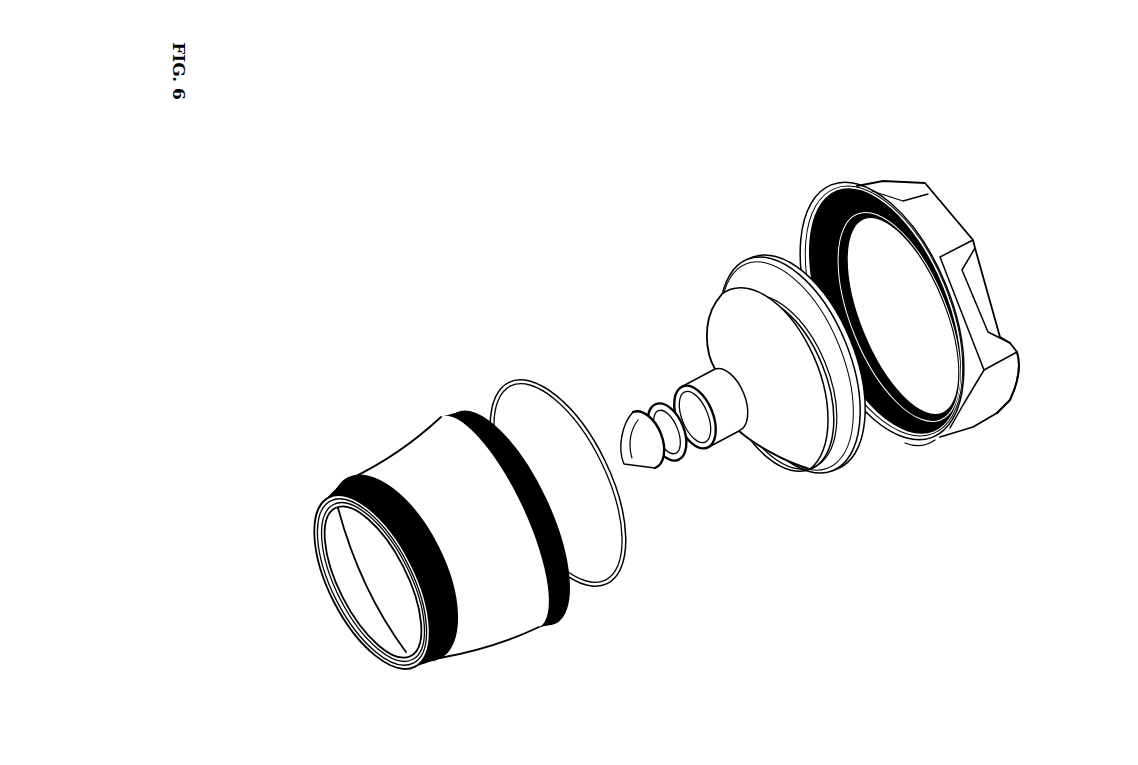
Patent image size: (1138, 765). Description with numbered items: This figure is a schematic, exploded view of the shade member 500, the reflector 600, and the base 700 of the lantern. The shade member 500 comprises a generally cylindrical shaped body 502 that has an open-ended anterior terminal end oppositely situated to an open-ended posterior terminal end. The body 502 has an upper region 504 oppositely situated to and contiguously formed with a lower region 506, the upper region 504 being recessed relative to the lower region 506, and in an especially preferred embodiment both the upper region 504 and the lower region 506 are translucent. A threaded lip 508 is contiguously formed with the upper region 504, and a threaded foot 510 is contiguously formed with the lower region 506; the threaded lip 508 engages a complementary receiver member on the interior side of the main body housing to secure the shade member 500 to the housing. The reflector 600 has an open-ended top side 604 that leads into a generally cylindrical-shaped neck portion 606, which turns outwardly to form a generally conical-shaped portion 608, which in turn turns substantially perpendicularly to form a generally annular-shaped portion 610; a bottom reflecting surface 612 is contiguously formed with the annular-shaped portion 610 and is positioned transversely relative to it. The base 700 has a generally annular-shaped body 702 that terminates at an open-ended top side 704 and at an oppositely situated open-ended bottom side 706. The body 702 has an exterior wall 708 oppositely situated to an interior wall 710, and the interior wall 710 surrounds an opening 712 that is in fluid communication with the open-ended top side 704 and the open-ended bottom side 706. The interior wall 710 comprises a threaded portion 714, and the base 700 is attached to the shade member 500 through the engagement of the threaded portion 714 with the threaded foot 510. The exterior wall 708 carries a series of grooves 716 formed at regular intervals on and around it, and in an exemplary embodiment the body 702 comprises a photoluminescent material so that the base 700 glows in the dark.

The shade member 500 is at (407, 392).
The body 502 is at (515, 650).
The upper region 504 is at (476, 636).
The lower region 506 is at (430, 434).
The threaded lip 508 is at (345, 485).
The threaded foot 510 is at (566, 606).
The reflector 600 is at (688, 272).
The open-ended top side 604 is at (672, 394).
The neck portion 606 is at (731, 424).
The conical-shaped portion 608 is at (800, 445).
The annular-shaped portion 610 is at (750, 266).
The bottom reflecting surface 612 is at (862, 438).
The base 700 is at (1034, 412).
The body 702 is at (848, 176).
The open-ended top side 704 is at (927, 442).
The open-ended bottom side 706 is at (1028, 378).
The exterior wall 708 is at (930, 212).
The interior wall 710 is at (828, 202).
The opening 712 is at (958, 420).
The threaded portion 714 is at (896, 437).
The series of grooves 716 is at (885, 181).